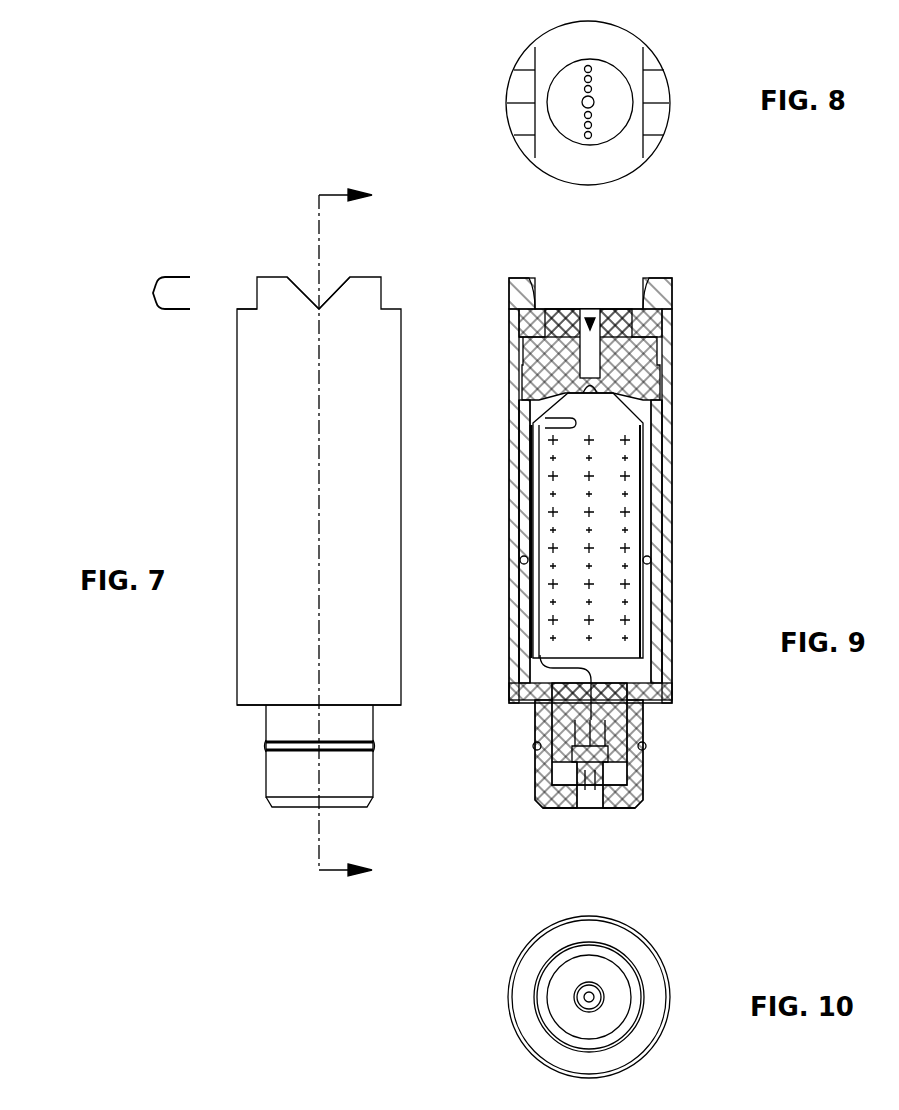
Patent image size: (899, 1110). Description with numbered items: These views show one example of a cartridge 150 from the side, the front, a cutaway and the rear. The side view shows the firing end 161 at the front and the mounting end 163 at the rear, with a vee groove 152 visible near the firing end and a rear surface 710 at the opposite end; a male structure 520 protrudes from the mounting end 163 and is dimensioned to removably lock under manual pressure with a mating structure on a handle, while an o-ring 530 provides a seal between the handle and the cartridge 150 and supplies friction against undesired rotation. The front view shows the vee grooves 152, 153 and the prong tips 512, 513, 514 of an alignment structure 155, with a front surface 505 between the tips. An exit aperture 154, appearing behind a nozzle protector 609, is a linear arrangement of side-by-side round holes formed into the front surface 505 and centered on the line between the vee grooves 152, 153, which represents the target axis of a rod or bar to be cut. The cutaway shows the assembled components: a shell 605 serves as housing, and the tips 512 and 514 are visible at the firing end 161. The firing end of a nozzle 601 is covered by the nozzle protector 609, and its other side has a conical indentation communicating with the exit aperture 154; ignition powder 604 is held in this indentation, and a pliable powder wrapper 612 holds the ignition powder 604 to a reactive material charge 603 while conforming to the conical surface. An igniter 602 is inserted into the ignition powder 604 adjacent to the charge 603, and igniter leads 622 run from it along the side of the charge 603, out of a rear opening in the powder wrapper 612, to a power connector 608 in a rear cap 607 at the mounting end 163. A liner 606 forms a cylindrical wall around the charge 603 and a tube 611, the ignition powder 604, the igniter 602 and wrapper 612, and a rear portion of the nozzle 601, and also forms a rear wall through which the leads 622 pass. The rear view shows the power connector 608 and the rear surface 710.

In FIG. 8, the cartridge 150 is at (432, 85).
In FIG. 7, the cartridge 150 is at (207, 434).
In FIG. 9, the cartridge 150 is at (704, 324).
In FIG. 10, the cartridge 150 is at (494, 975).
In FIG. 8, the vee groove 152 is at (524, 102).
In FIG. 7, the vee groove 152 is at (318, 305).
In FIG. 8, the vee groove 153 is at (654, 103).
In FIG. 8, the exit aperture 154 is at (582, 108).
In FIG. 9, the exit aperture 154 is at (590, 308).
In FIG. 7, the alignment structure 155 is at (156, 272).
In FIG. 7, the firing end 161 is at (235, 312).
In FIG. 7, the mounting end 163 is at (236, 690).
In FIG. 8, the front surface 505 is at (590, 160).
In FIG. 8, the prong tip 512 is at (645, 57).
In FIG. 9, the prong tip 512 is at (646, 284).
In FIG. 8, the prong tip 513 is at (529, 148).
In FIG. 8, the prong tip 514 is at (529, 57).
In FIG. 9, the prong tip 514 is at (536, 300).
In FIG. 7, the male structure 520 is at (267, 778).
In FIG. 7, the o-ring 530 is at (374, 746).
In FIG. 9, the o-ring 530 is at (538, 740).
In FIG. 9, the nozzle 601 is at (663, 378).
In FIG. 9, the igniter 602 is at (519, 395).
In FIG. 9, the reactive material charge 603 is at (612, 552).
In FIG. 9, the ignition powder 604 is at (666, 396).
In FIG. 9, the shell 605 is at (524, 330).
In FIG. 9, the liner 606 is at (522, 352).
In FIG. 9, the rear cap 607 is at (647, 772).
In FIG. 9, the power connector 608 is at (582, 806).
In FIG. 10, the power connector 608 is at (600, 985).
In FIG. 9, the nozzle protector 609 is at (560, 310).
In FIG. 9, the tube 611 is at (642, 615).
In FIG. 9, the powder wrapper 612 is at (512, 535).
In FIG. 9, the igniter leads 622 is at (560, 420).
In FIG. 7, the rear surface 710 is at (286, 808).
In FIG. 9, the rear surface 710 is at (605, 806).
In FIG. 10, the rear surface 710 is at (580, 928).